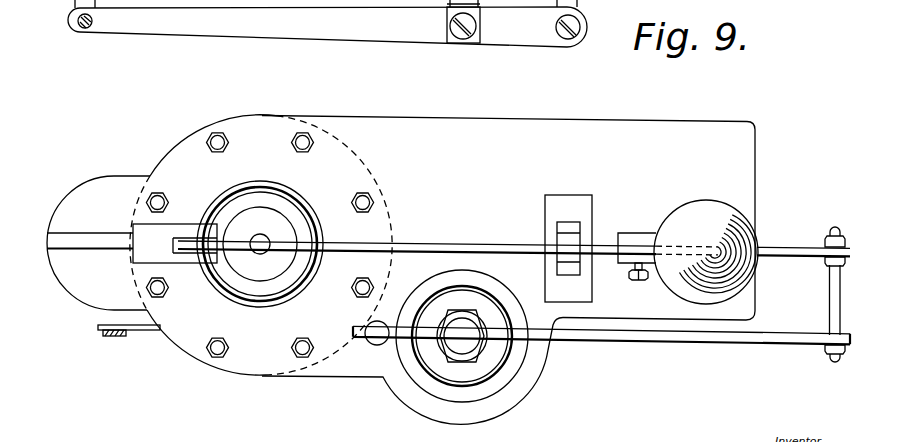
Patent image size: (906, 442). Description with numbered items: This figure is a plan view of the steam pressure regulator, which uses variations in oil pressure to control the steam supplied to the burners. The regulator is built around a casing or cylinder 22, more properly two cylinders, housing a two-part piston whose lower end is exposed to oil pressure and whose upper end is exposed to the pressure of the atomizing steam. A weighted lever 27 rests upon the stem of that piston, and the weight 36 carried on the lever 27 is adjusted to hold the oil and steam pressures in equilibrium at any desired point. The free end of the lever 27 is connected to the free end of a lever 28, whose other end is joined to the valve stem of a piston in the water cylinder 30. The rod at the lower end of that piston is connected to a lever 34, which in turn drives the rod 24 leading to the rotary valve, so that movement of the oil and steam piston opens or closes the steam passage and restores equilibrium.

The casing or cylinder 22 is at (293, 202).
The rod 24 is at (118, 334).
The weighted lever 27 is at (514, 240).
The lever 28 is at (740, 345).
The water cylinder 30 is at (508, 320).
The lever 34 is at (154, 332).
The weight 36 is at (683, 203).